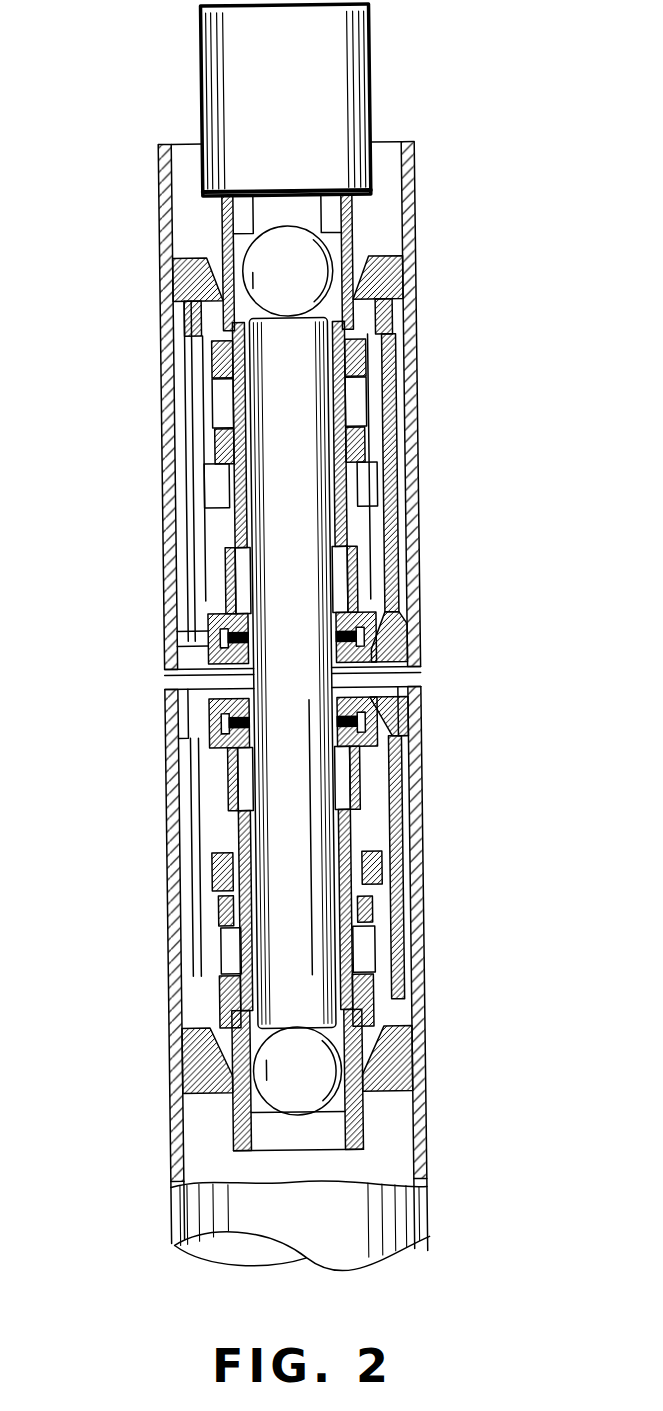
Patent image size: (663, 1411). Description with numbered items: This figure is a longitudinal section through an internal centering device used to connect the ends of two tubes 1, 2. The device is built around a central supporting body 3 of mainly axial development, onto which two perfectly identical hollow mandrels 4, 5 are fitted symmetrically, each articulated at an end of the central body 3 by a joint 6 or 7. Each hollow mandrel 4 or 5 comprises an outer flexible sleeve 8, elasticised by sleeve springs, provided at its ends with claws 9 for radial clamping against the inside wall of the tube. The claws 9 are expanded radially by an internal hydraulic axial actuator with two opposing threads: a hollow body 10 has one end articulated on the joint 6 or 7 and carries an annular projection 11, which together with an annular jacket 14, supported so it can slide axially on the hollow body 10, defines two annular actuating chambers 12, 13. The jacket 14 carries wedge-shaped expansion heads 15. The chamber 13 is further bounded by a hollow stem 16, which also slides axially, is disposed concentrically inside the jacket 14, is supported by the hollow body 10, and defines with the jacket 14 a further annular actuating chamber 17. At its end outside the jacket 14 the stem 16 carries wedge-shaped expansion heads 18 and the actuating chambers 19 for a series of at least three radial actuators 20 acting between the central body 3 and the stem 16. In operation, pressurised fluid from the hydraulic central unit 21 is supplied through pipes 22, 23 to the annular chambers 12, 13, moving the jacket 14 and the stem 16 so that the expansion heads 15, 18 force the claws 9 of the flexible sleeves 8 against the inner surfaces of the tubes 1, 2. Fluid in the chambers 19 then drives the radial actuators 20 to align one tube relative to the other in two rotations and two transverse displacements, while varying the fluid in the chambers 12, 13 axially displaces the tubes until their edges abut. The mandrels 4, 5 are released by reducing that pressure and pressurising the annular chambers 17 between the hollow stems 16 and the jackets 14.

The tube 1 is at (162, 346).
The tube 2 is at (170, 885).
The central supporting body 3 is at (318, 797).
The hollow mandrel 4 is at (400, 525).
The hollow mandrel 5 is at (190, 842).
The joint 6 is at (340, 292).
The joint 7 is at (316, 1077).
The outer flexible sleeve 8 is at (186, 423).
The claws 9 is at (188, 270).
The hollow body 10 is at (232, 400).
The annular projection 11 is at (216, 343).
The annular actuating chamber 12 is at (372, 340).
The annular actuating chamber 13 is at (368, 424).
The annular jacket 14 is at (212, 442).
The wedge-shaped expansion heads 15 is at (205, 248).
The hollow stem 16 is at (230, 540).
The annular actuating chamber 17 is at (205, 493).
The wedge-shaped expansion heads 18 is at (200, 643).
The actuating chambers 19 is at (223, 617).
The radial actuators 20 is at (178, 672).
The hydraulic central unit 21 is at (366, 82).
The pipe 22 is at (350, 208).
The pipe 23 is at (223, 213).